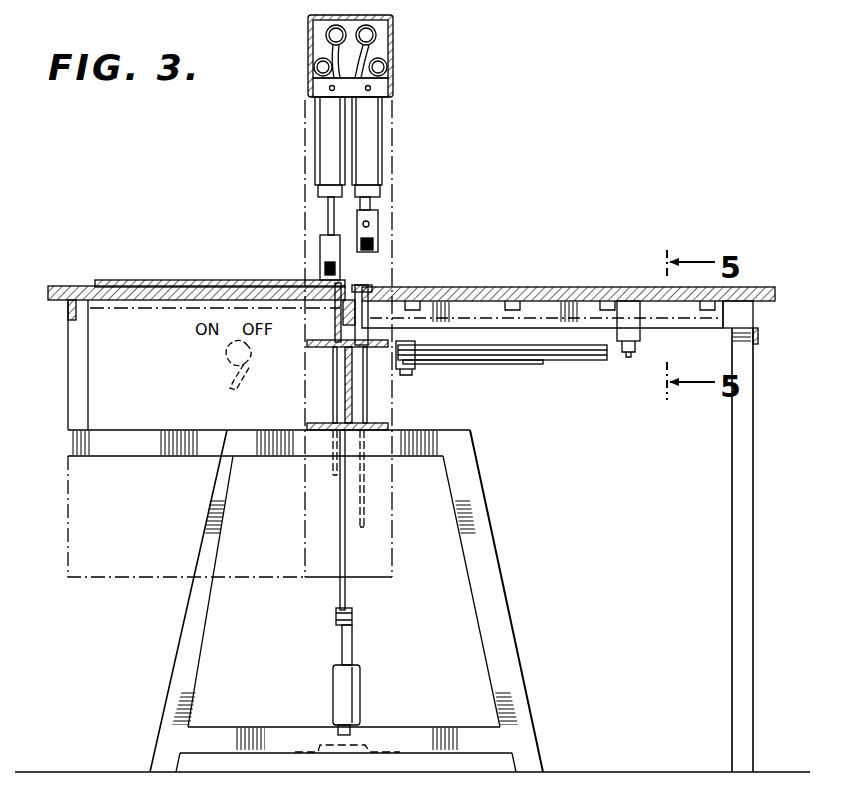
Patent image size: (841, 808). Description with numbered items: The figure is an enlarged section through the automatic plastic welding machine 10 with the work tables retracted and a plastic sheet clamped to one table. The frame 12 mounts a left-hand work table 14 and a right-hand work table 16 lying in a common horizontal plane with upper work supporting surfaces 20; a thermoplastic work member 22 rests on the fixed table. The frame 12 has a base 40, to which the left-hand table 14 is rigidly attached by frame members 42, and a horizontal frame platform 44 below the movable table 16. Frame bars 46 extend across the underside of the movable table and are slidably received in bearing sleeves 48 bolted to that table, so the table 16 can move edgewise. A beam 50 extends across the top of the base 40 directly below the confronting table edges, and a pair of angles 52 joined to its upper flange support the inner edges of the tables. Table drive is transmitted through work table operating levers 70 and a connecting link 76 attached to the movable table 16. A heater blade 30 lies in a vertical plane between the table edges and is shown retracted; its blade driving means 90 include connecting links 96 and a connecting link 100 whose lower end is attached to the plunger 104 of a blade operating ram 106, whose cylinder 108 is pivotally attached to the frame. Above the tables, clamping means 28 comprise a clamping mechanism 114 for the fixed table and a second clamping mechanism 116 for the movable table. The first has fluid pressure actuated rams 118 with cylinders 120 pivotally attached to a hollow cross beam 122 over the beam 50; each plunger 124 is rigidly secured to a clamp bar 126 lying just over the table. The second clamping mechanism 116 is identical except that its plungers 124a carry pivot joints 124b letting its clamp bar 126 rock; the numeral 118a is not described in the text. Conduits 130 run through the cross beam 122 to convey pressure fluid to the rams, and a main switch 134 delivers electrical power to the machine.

The automatic plastic welding machine 10 is at (592, 182).
The frame 12 is at (486, 500).
The left-hand work table 14 is at (62, 283).
The right-hand work table 16 is at (578, 291).
The upper work supporting surfaces 20 is at (78, 288).
The thermoplastic work member 22 is at (203, 240).
The clamping means 28 is at (396, 139).
The heater blade 30 is at (338, 312).
The base 40 is at (500, 612).
The frame members 42 is at (82, 376).
The horizontal frame platform 44 is at (757, 340).
The frame bars 46 is at (744, 318).
The bearing sleeves 48 is at (677, 313).
The beam 50 is at (345, 396).
The angles 52 is at (332, 334).
The work table operating levers 70 is at (450, 356).
The connecting link 76 is at (540, 358).
The blade driving means 90 is at (336, 498).
The connecting links 96 is at (366, 405).
The connecting link 100 is at (338, 593).
The plunger 104 is at (352, 644).
The blade operating ram 106 is at (362, 688).
The cylinder 108 is at (340, 690).
The clamping mechanism 114 is at (317, 152).
The second clamping mechanism 116 is at (382, 120).
The fluid pressure actuated rams 118 is at (327, 170).
The cylinder end cap 118a is at (373, 166).
The cylinders 120 is at (330, 115).
The cross beam 122 is at (312, 60).
The plunger 124 is at (328, 216).
The plungers 124a is at (372, 206).
The pivot joints 124b is at (379, 220).
The clamp bar 126 is at (322, 272).
The conduits 130 is at (330, 36).
The main switch 134 is at (228, 356).